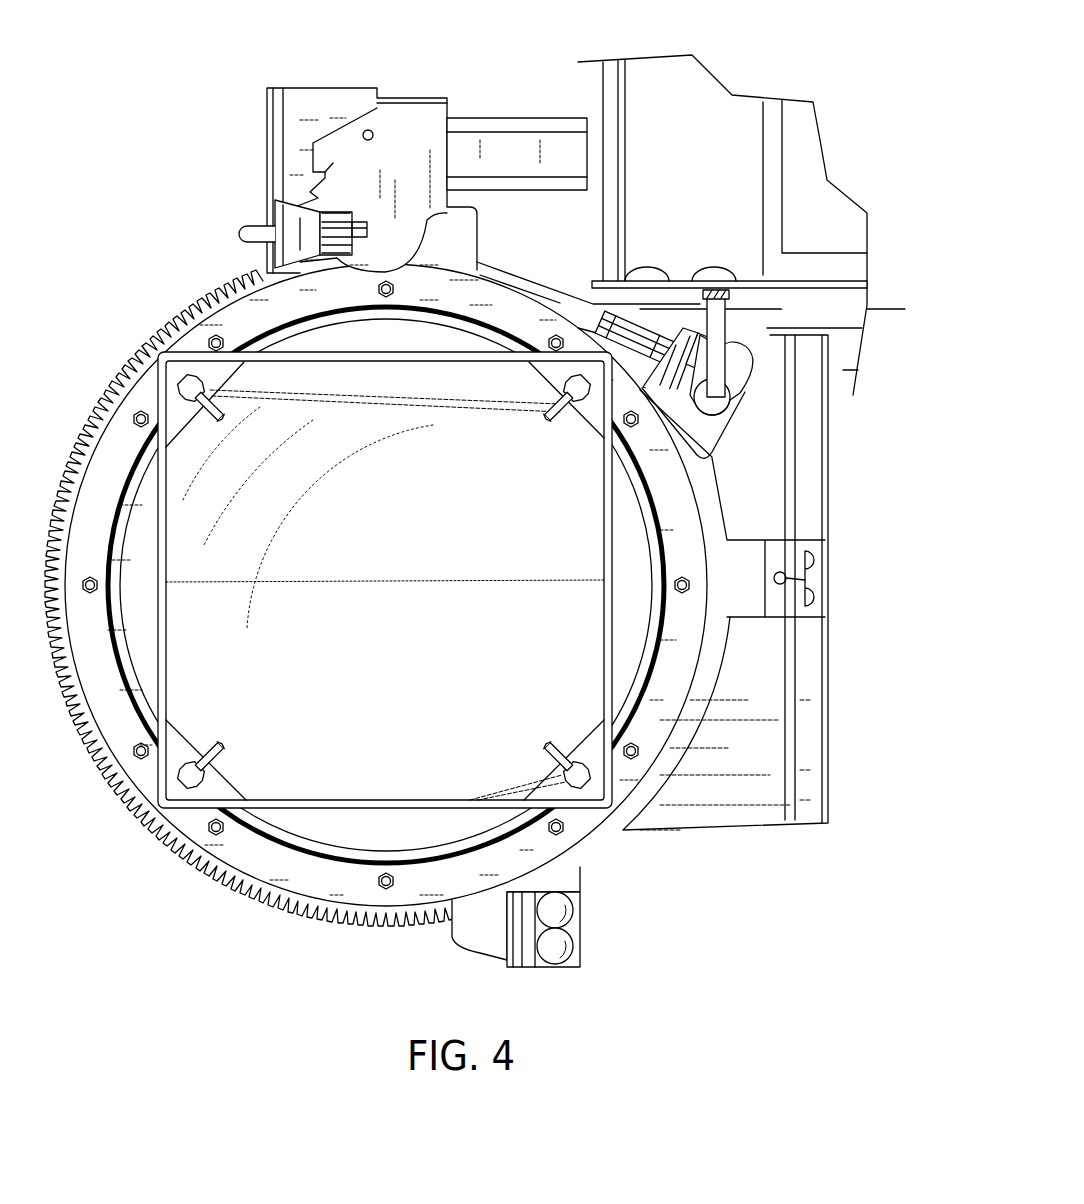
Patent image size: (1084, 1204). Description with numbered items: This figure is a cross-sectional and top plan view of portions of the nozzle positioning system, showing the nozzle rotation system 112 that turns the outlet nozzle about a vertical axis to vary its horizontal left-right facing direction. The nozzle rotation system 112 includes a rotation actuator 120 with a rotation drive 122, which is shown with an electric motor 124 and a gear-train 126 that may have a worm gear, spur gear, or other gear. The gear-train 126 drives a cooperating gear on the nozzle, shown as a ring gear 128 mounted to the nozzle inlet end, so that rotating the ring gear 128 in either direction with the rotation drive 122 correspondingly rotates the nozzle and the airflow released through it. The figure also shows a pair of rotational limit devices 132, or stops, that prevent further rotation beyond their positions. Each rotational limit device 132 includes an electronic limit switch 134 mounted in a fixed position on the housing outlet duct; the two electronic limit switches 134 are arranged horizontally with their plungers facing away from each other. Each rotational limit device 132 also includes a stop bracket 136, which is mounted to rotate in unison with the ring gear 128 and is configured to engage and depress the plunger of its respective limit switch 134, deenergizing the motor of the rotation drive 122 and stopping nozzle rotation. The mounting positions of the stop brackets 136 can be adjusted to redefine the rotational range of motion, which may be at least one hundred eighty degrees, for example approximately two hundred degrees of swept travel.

The nozzle rotation system 112 is at (376, 501).
The rotation actuator 120 is at (539, 76).
The rotation drive 122 is at (405, 84).
The electric motor 124 is at (492, 157).
The gear-train 126 is at (325, 152).
The ring gear 128 is at (108, 388).
The rotational limit device 132 is at (677, 270).
The electronic limit switch 134 is at (245, 233).
The stop bracket 136 is at (703, 372).